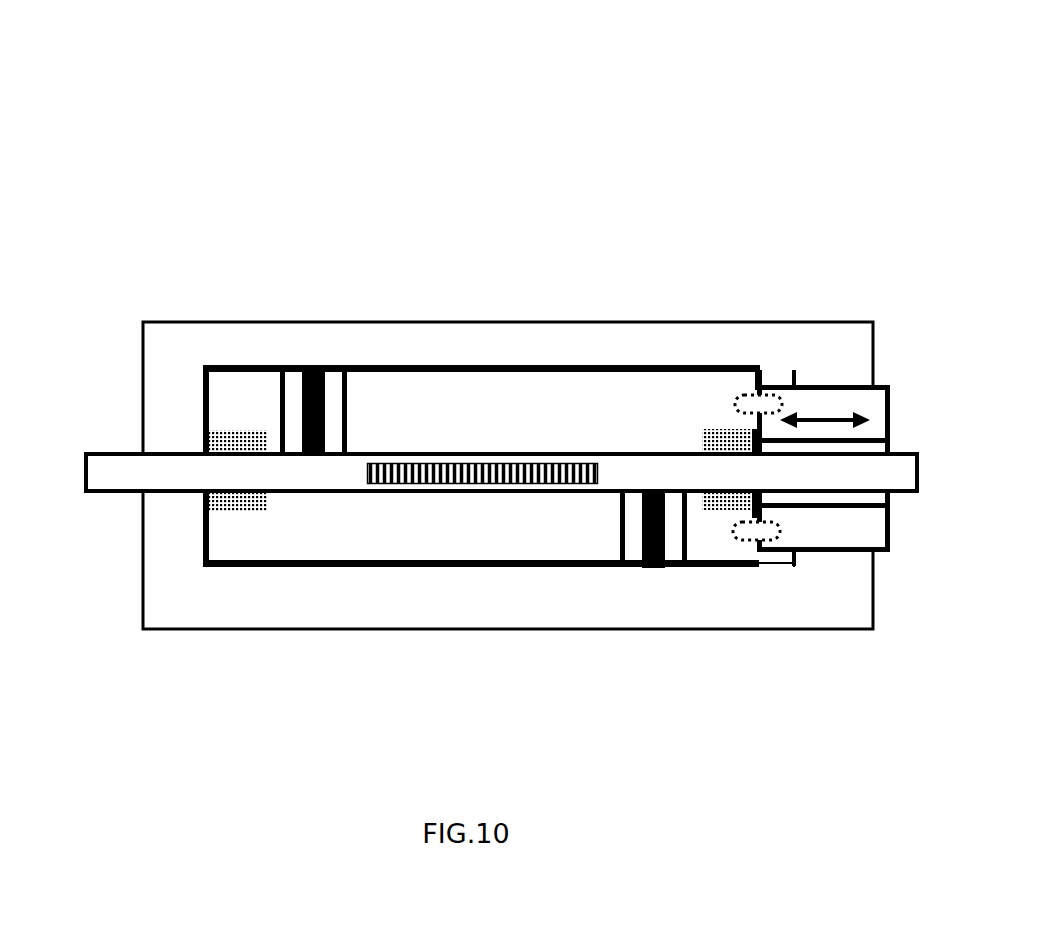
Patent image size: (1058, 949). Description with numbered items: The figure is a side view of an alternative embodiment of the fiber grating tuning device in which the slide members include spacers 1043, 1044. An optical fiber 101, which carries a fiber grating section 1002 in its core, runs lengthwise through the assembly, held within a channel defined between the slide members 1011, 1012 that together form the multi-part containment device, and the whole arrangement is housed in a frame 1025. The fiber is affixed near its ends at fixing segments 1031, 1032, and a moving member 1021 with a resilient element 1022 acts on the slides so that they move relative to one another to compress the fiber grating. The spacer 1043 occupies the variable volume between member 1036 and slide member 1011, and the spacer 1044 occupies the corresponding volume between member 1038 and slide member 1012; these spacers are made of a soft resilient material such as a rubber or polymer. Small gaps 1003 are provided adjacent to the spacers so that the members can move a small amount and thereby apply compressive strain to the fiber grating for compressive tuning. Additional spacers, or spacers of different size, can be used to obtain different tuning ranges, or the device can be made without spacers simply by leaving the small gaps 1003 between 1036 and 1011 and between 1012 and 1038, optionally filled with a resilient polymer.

The optical fiber 101 is at (137, 472).
The scale / grating 1002 is at (473, 463).
The small gaps 1003 is at (291, 423).
The slide member 1011 is at (552, 400).
The slide member 1012 is at (294, 533).
The moving member 1021 is at (847, 395).
The elastic member 1022 is at (765, 397).
The outer housing 1025 is at (405, 593).
The right bearing 1031 is at (715, 428).
The left bearing 1032 is at (223, 430).
The fiber fixing segment 1036 is at (247, 400).
The fiber fixing segment 1038 is at (712, 540).
The spacer 1043 is at (320, 365).
The spacer 1044 is at (665, 565).